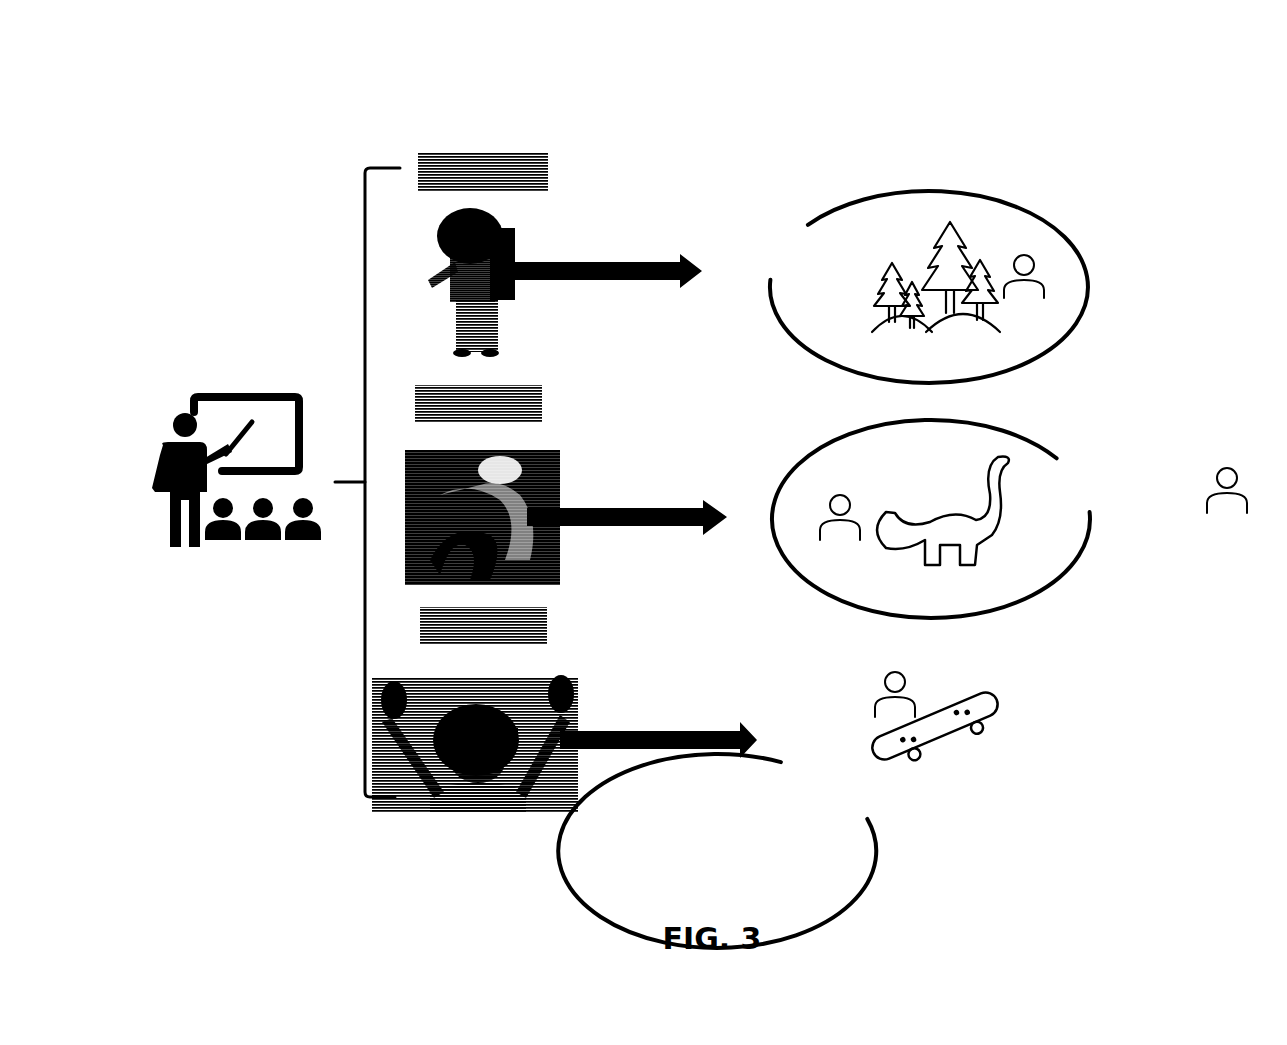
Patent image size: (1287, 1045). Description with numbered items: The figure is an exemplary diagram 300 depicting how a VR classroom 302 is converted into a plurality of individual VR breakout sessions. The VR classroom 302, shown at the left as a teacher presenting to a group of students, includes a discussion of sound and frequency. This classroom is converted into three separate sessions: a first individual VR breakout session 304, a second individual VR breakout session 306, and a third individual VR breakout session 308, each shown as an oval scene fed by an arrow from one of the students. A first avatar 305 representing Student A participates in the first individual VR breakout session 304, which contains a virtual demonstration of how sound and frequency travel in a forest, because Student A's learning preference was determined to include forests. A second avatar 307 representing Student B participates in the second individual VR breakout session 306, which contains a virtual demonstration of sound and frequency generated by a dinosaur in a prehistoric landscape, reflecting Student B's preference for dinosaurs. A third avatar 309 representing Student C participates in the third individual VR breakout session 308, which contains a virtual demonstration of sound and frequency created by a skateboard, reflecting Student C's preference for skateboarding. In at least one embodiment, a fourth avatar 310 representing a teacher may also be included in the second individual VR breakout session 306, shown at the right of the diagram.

The diagram 300 is at (170, 72).
The VR classroom 302 is at (193, 397).
The first individual VR breakout session 304 is at (958, 232).
The first avatar 305 is at (1032, 257).
The second individual VR breakout session 306 is at (1012, 462).
The second avatar 307 is at (832, 495).
The third individual VR breakout session 308 is at (996, 700).
The third avatar 309 is at (892, 673).
The fourth avatar 310 is at (1232, 468).